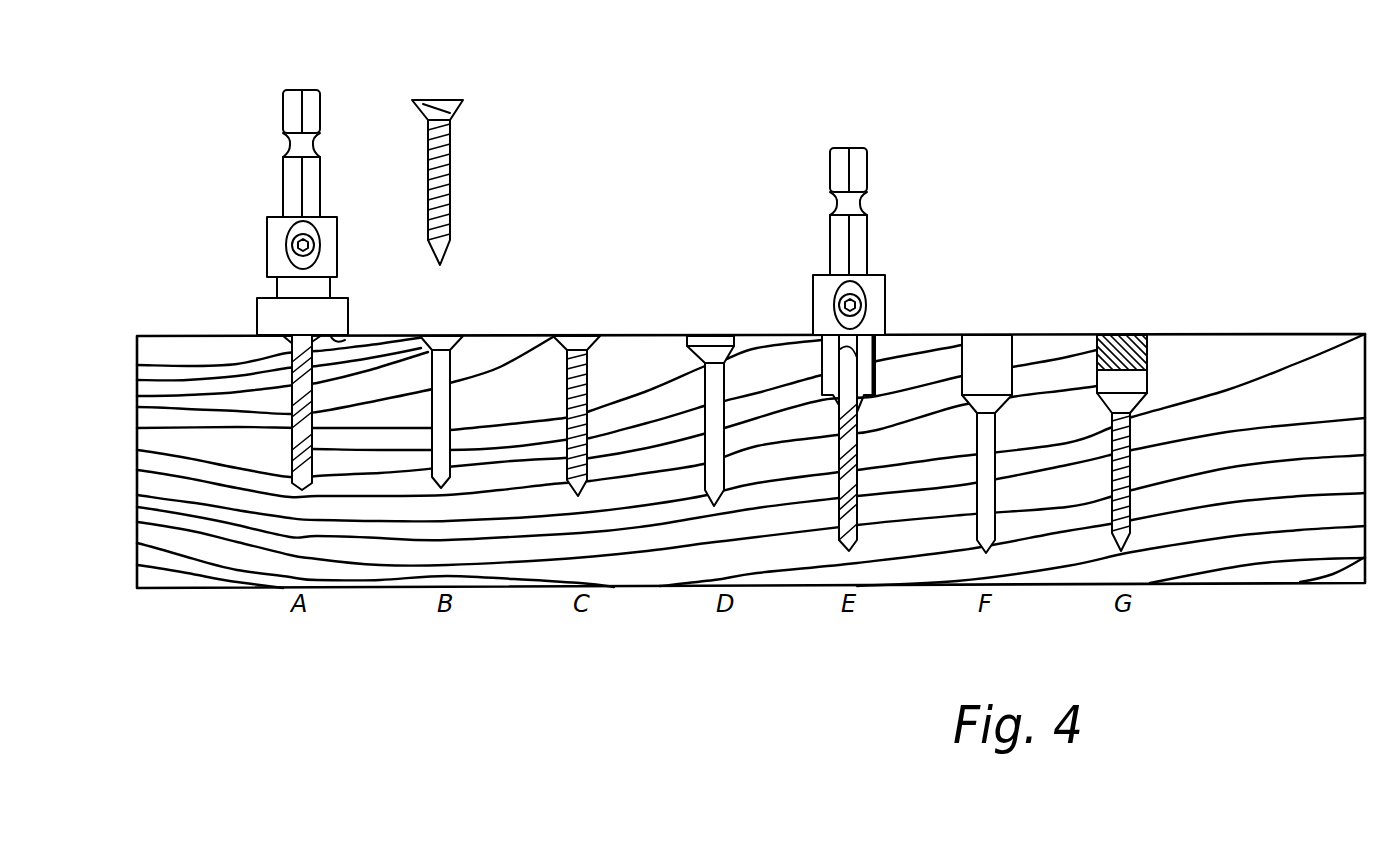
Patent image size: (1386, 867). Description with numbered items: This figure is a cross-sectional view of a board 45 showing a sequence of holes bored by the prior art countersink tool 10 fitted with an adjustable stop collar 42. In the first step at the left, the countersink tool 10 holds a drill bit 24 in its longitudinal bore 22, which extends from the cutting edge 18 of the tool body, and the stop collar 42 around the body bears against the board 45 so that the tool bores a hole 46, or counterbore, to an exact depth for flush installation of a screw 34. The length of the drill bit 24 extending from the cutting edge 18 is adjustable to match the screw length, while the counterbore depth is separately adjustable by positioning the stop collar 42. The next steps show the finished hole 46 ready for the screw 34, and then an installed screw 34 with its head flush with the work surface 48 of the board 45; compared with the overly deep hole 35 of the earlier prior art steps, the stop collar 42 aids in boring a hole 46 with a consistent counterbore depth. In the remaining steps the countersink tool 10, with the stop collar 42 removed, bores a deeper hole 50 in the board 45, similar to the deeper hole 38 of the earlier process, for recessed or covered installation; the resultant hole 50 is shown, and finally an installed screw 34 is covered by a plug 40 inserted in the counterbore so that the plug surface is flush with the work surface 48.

The countersink tool 10 is at (553, 290).
The cutting edge 18 is at (294, 350).
The longitudinal bore 22 is at (318, 340).
The drill bit 24 is at (292, 403).
The screw 34 is at (455, 100).
The hole 35 is at (712, 340).
The deeper hole 38 is at (838, 506).
The plug 40 is at (1114, 337).
The stop collar 42 is at (263, 305).
The board 45 is at (1283, 334).
The hole 46 is at (449, 337).
The work surface 48 is at (612, 337).
The deeper hole 50 is at (878, 344).